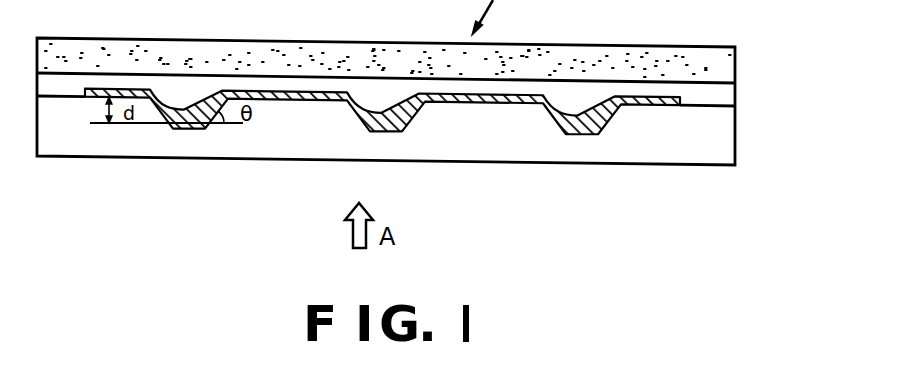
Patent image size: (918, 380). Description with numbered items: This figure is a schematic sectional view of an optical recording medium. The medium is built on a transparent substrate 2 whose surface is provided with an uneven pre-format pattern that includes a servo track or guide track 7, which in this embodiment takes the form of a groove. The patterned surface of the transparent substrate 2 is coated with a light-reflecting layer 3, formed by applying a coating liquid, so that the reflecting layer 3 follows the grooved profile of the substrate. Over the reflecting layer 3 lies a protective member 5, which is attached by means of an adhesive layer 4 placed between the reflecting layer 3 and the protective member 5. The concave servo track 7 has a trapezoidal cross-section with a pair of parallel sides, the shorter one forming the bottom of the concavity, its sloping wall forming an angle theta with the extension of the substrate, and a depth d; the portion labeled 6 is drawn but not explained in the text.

The substrate 2 is at (722, 152).
The recording film 3 is at (674, 103).
The protective layer 4 is at (716, 98).
The cover layer 5 is at (731, 60).
The land portion 6 is at (485, 100).
The groove portion 7 is at (574, 134).